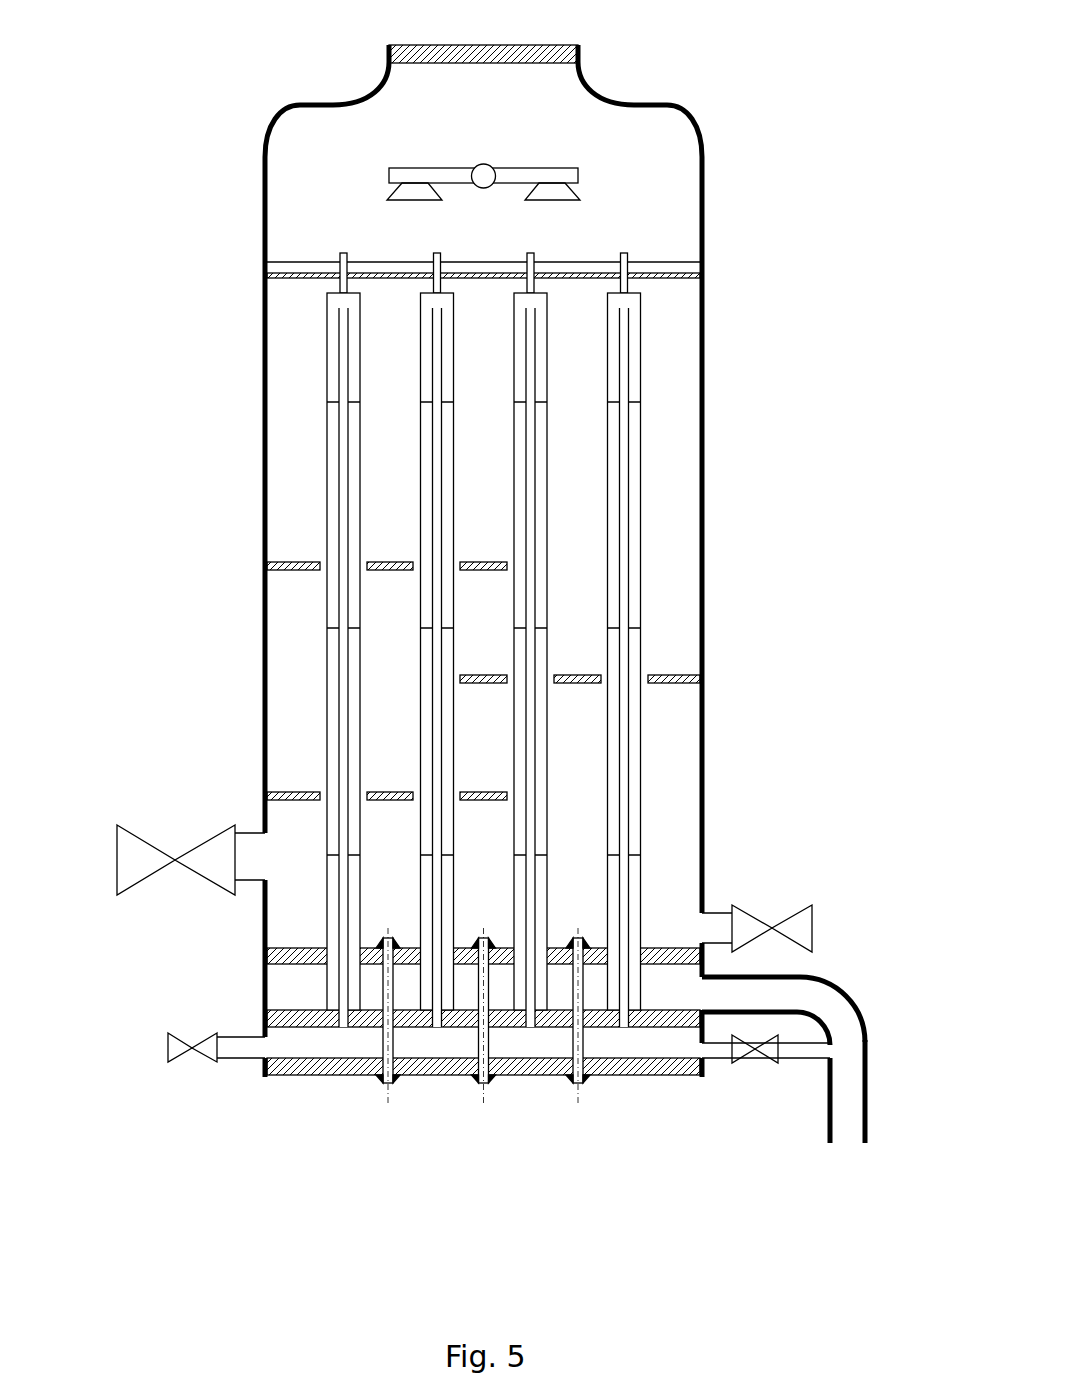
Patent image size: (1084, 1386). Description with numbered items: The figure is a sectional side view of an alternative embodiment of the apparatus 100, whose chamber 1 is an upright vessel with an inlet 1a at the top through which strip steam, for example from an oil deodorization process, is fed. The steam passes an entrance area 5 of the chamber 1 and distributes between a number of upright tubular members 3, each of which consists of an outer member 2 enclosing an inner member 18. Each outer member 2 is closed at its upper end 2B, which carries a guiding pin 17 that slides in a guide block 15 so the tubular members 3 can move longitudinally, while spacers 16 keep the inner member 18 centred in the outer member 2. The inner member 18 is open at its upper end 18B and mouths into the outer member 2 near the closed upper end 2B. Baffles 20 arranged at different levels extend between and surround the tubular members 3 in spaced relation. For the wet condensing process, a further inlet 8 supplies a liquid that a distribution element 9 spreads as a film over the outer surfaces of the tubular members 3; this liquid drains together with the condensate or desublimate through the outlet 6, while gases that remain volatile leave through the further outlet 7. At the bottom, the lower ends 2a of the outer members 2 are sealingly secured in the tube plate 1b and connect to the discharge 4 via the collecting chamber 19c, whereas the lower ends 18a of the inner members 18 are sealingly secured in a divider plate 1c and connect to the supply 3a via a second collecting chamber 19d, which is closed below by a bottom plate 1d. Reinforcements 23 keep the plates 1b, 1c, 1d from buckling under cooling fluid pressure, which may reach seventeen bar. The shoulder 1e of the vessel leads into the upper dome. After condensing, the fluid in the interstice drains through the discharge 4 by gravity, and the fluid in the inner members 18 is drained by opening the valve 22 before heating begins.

The chamber 1 is at (263, 630).
The inlet 1a is at (440, 46).
The upper dome / shoulder 1e is at (373, 77).
The entrance area 5 is at (592, 131).
The further inlet 8 is at (470, 171).
The distribution element 9 is at (405, 190).
The guide block 15 is at (310, 267).
The guiding pin 17 is at (627, 254).
The outer member 2 is at (327, 480).
The upper end of the outer member 2B is at (645, 292).
The tubular member 3 is at (638, 512).
The spacer 16 is at (330, 403).
The inner member 18 is at (340, 357).
The inner tube upper end 18B is at (630, 308).
The lower end of the inner member 18a is at (338, 993).
The baffles 20 is at (288, 788).
The tube plate 1b is at (280, 958).
The divider plate 1c is at (440, 1035).
The bottom plate 1d is at (460, 1065).
The collecting chamber 19c is at (426, 1085).
The second collecting chamber 19d is at (360, 1040).
The reinforcements 23 is at (487, 1085).
The further outlet 7 is at (210, 838).
The supply 3a is at (185, 1040).
The outlet 6 is at (770, 928).
The lower end of the outer member 2a is at (637, 932).
The valve 22 is at (743, 1060).
The discharge 4 is at (853, 1144).
The apparatus 100 is at (732, 1195).